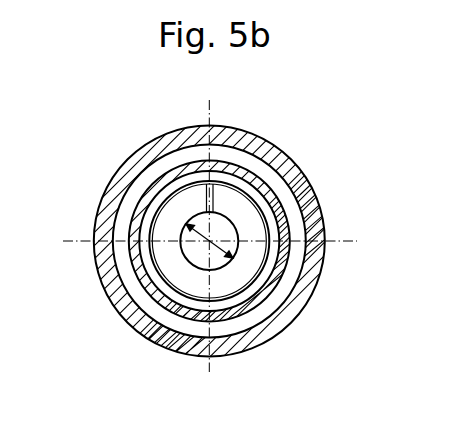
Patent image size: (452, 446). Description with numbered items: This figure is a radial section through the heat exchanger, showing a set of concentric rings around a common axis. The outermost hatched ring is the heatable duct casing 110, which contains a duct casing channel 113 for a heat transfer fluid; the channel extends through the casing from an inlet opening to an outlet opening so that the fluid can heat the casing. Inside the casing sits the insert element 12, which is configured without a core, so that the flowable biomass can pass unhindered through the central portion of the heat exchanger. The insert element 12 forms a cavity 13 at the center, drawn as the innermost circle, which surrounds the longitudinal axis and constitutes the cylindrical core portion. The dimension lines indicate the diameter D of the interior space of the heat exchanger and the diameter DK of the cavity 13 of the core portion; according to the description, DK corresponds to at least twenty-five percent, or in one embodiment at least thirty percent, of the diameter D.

The heatable duct casing 110 is at (275, 148).
The duct casing channel 113 is at (164, 161).
The insert element 12 is at (220, 277).
The cavity 13 is at (203, 257).
The diameter of the interior space of the heat exchanger D is at (253, 197).
The diameter of the cavity of the core portion DK is at (102, 272).